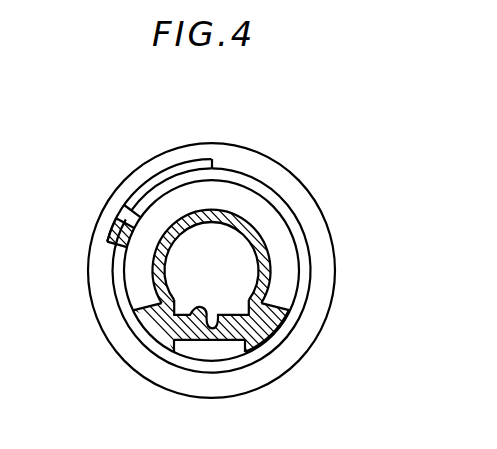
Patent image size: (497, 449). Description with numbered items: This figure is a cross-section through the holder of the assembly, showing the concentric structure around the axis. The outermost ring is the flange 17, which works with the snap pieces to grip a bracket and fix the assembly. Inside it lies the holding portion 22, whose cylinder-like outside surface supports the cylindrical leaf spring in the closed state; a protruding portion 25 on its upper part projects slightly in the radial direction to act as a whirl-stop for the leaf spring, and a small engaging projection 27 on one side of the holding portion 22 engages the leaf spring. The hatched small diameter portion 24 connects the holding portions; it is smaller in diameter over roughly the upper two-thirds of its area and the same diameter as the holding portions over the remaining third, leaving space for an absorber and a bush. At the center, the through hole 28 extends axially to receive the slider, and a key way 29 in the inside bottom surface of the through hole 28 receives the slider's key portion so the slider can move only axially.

The flange 17 is at (211, 237).
The holding portion 22 is at (253, 202).
The small diameter portion 24 is at (258, 265).
The protruding portion 25 is at (166, 158).
The engaging projection 27 is at (115, 237).
The through hole 28 is at (285, 307).
The key way 29 is at (182, 318).